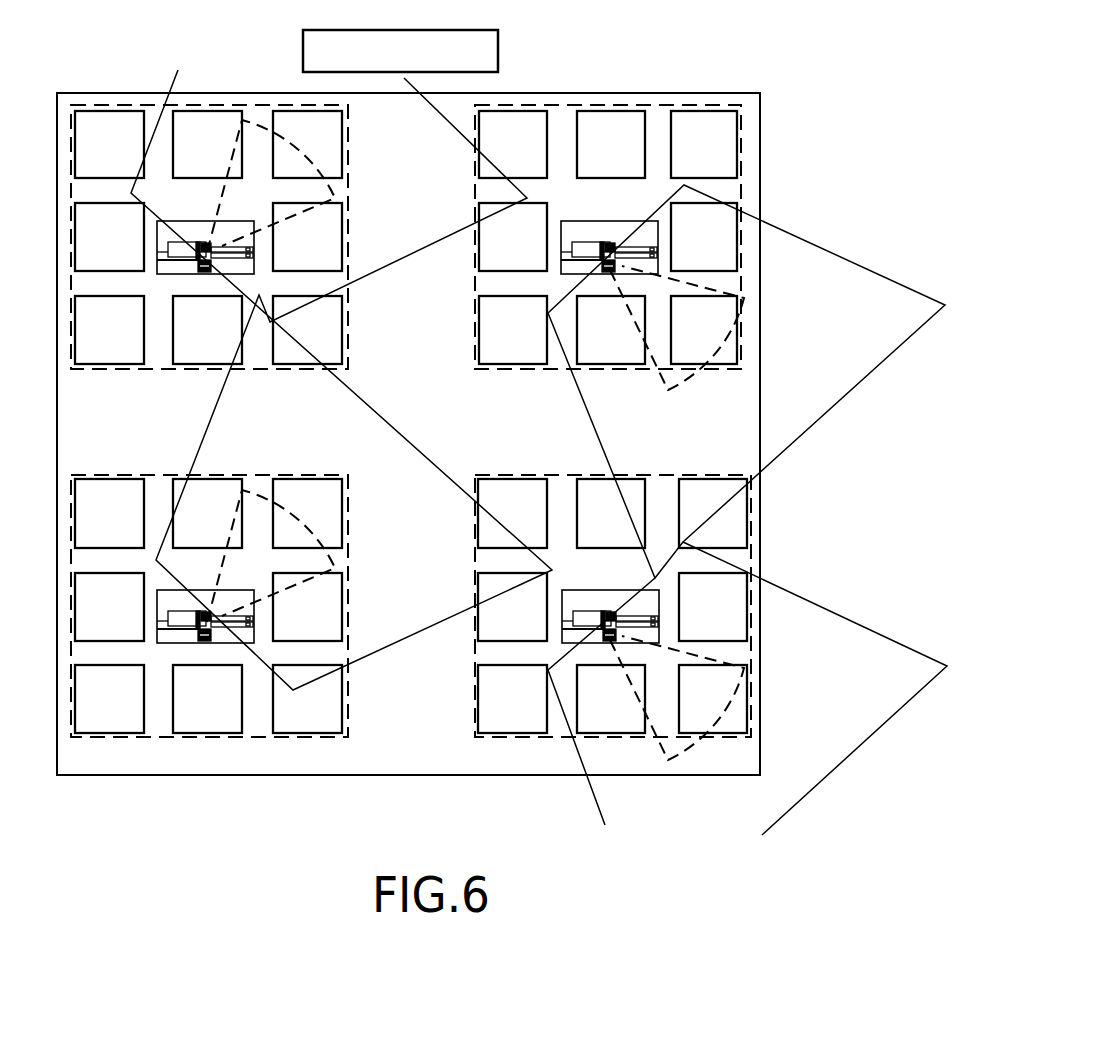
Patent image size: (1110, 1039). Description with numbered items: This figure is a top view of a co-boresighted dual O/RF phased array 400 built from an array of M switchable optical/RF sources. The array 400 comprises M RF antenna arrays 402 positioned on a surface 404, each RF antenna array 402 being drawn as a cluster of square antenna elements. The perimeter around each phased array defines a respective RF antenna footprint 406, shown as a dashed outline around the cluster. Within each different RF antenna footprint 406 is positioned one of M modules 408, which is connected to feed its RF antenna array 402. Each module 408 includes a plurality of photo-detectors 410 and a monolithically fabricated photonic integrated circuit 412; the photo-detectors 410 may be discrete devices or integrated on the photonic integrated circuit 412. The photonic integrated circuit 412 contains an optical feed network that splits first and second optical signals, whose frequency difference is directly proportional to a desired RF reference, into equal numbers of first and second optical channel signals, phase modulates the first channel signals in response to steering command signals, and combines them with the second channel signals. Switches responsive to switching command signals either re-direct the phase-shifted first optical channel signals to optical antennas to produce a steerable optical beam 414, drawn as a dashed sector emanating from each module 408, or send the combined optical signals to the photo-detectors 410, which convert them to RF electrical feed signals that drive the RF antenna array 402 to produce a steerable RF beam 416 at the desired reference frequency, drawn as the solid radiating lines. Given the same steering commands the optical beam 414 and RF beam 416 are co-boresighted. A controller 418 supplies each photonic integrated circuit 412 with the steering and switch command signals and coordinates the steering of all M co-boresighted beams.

The co-boresighted dual O/RF phased array 400 is at (515, 430).
The RF antenna array 402 is at (726, 149).
The surface 404 is at (445, 410).
The RF antenna footprint 406 is at (740, 198).
The module 408 is at (581, 226).
The photo-detector 410 is at (640, 218).
The photonic integrated circuit 412 is at (553, 243).
The steerable optical beam 414 is at (688, 282).
The steerable RF beam 416 is at (835, 254).
The controller 418 is at (498, 51).